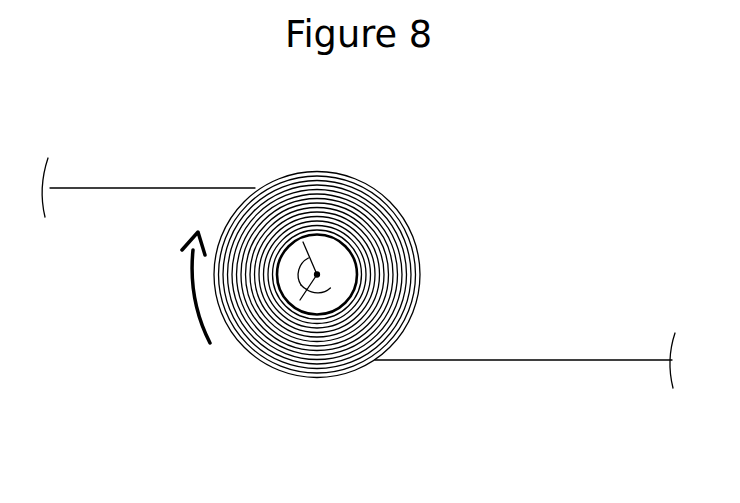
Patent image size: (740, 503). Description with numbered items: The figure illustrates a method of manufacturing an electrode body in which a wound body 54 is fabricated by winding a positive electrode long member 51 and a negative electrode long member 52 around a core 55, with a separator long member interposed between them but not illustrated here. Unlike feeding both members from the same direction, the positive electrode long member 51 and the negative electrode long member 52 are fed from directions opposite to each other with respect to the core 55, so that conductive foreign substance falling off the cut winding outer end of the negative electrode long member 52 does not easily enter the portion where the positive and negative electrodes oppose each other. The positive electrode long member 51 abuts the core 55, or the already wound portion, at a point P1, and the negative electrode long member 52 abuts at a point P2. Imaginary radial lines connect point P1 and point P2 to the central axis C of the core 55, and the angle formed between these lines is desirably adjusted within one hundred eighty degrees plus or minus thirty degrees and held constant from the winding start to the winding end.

The positive electrode long member 51 is at (536, 362).
The negative electrode long member 52 is at (138, 185).
The wound body 54 is at (235, 345).
The core 55 is at (388, 190).
The point P1 is at (378, 363).
The point P2 is at (252, 187).
The central axis C is at (317, 274).